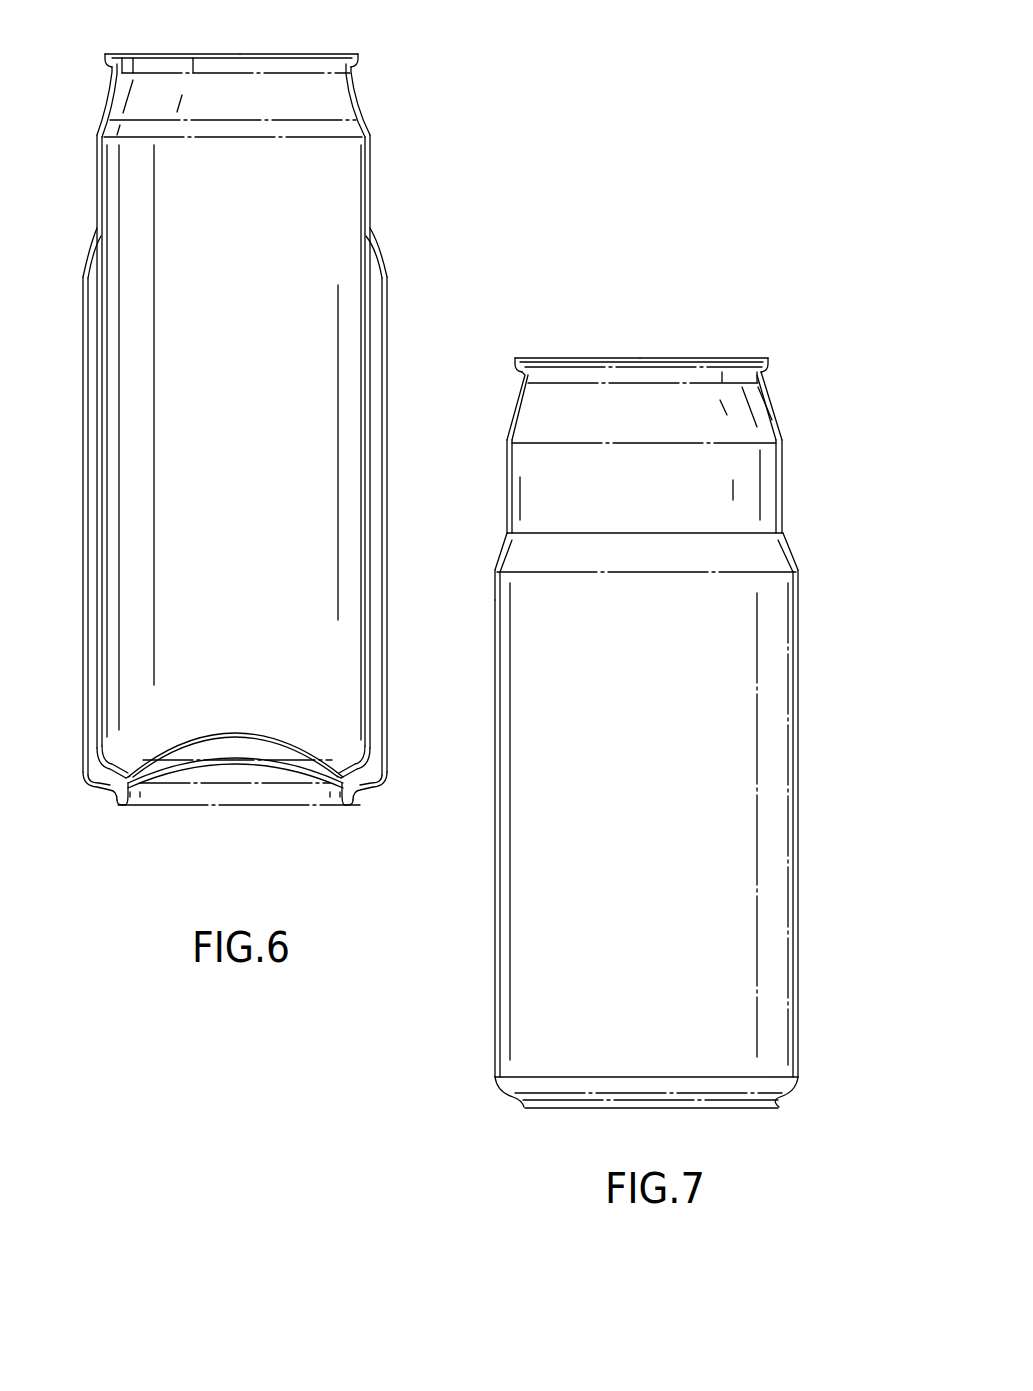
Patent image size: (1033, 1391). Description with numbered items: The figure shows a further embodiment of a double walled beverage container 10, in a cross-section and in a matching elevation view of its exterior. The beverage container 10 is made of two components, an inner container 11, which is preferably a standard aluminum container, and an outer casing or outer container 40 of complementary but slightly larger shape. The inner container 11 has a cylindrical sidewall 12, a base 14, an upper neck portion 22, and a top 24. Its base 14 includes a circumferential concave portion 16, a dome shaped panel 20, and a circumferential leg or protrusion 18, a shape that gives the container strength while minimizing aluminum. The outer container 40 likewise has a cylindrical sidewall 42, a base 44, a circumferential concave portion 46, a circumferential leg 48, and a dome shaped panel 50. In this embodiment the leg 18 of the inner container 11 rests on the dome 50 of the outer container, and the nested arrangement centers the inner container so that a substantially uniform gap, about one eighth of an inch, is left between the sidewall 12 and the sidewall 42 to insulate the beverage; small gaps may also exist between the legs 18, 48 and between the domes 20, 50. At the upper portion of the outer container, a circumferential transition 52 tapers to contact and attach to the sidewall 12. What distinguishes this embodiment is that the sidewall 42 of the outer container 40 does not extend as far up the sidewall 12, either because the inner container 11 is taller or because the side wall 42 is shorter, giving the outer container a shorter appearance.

In FIG. 6, the double walled beverage container 10 is at (437, 151).
In FIG. 7, the inner container 11 is at (797, 378).
In FIG. 6, the sidewall 12 is at (92, 173).
In FIG. 7, the sidewall 12 is at (644, 486).
In FIG. 6, the base 14 is at (263, 725).
In FIG. 6, the circumferential concave portion 16 is at (108, 722).
In FIG. 6, the circumferential leg 18 is at (128, 774).
In FIG. 6, the dome shaped panel 20 is at (222, 732).
In FIG. 6, the upper neck portion 22 is at (110, 97).
In FIG. 7, the upper neck portion 22 is at (518, 408).
In FIG. 6, the top 24 is at (282, 48).
In FIG. 7, the top 24 is at (630, 340).
In FIG. 7, the outer container 40 is at (822, 768).
In FIG. 6, the cylindrical sidewall 42 is at (84, 380).
In FIG. 7, the cylindrical sidewall 42 is at (632, 678).
In FIG. 6, the base 44 is at (203, 813).
In FIG. 7, the base 44 is at (606, 1114).
In FIG. 6, the circumferential concave portion 46 is at (103, 791).
In FIG. 6, the circumferential leg 48 is at (120, 808).
In FIG. 6, the dome shaped panel 50 is at (233, 762).
In FIG. 6, the circumferential transition 52 is at (88, 245).
In FIG. 7, the circumferential transition 52 is at (563, 533).